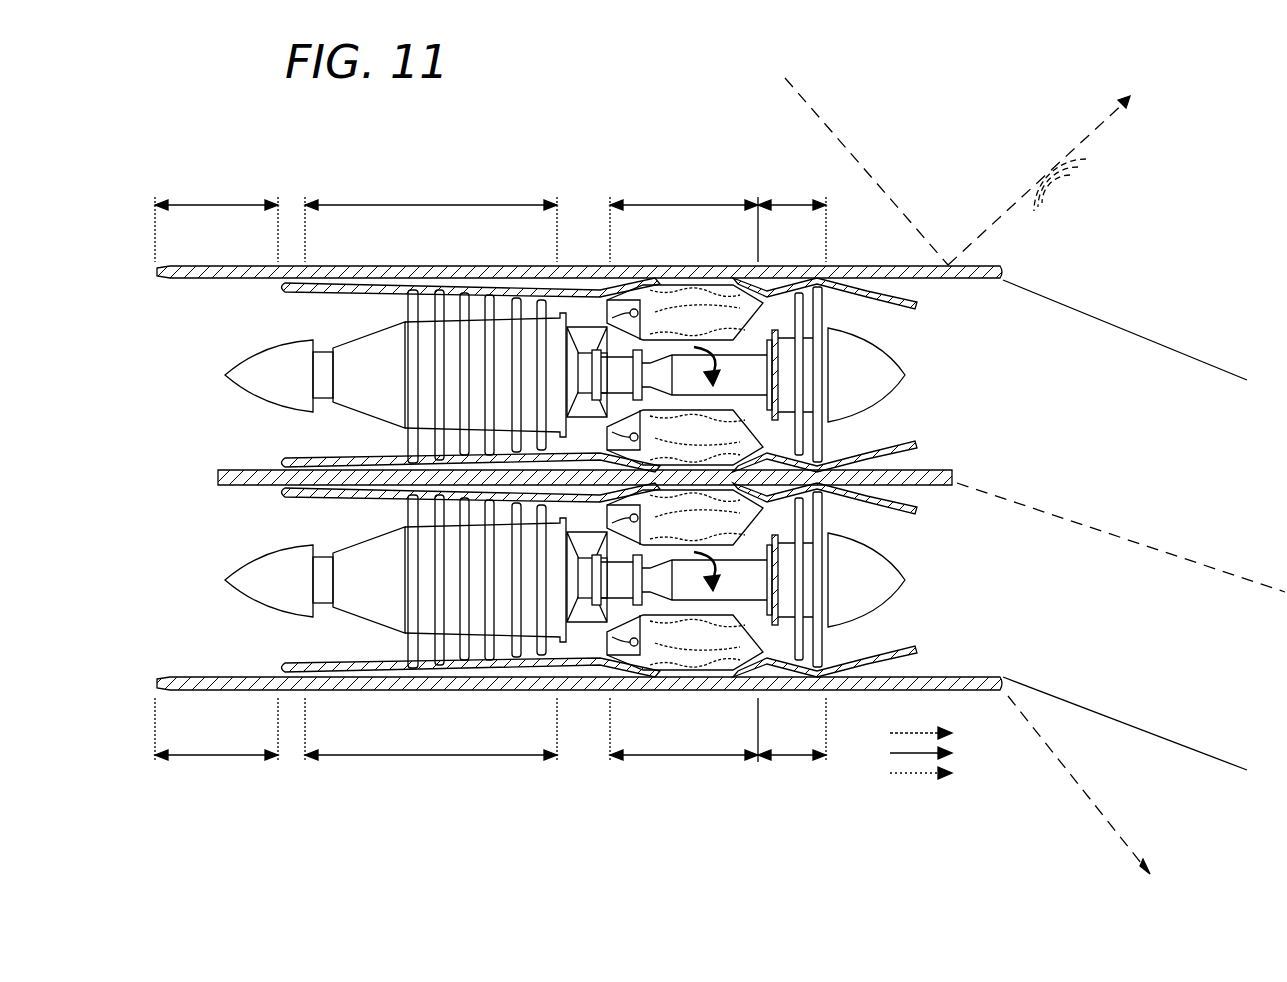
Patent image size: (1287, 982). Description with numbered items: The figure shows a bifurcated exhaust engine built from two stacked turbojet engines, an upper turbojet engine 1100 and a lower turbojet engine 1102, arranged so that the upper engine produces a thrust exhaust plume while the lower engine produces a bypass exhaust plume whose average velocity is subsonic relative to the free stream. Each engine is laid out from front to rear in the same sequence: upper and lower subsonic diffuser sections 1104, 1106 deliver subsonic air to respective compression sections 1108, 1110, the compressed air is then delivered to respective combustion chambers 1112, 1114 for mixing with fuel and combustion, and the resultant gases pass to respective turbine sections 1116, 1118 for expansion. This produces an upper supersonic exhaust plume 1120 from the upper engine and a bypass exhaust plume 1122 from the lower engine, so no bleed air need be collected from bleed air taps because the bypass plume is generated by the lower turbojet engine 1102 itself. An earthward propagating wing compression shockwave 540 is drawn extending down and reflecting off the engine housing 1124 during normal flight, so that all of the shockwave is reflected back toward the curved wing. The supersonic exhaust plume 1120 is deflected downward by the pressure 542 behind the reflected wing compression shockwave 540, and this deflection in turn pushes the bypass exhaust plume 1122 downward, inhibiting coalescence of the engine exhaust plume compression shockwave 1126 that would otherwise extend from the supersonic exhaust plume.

The upper turbojet engine 1100 is at (588, 252).
The lower turbojet engine 1102 is at (588, 710).
The upper subsonic diffuser section 1104 is at (215, 200).
The lower subsonic diffuser section 1106 is at (215, 760).
The upper compression section 1108 is at (428, 200).
The lower compression section 1110 is at (428, 760).
The upper combustion chamber 1112 is at (687, 200).
The lower combustion chamber 1114 is at (687, 760).
The upper turbine section 1116 is at (792, 200).
The lower turbine section 1118 is at (792, 760).
The upper supersonic exhaust plume 1120 is at (1068, 402).
The bypass exhaust plume 1122 is at (1068, 614).
The engine housing 1124 is at (990, 266).
The engine exhaust plume compression shockwave 1126 is at (1078, 785).
The earthward propagating wing compression shockwave 540 is at (848, 148).
The pressure 542 is at (1092, 185).